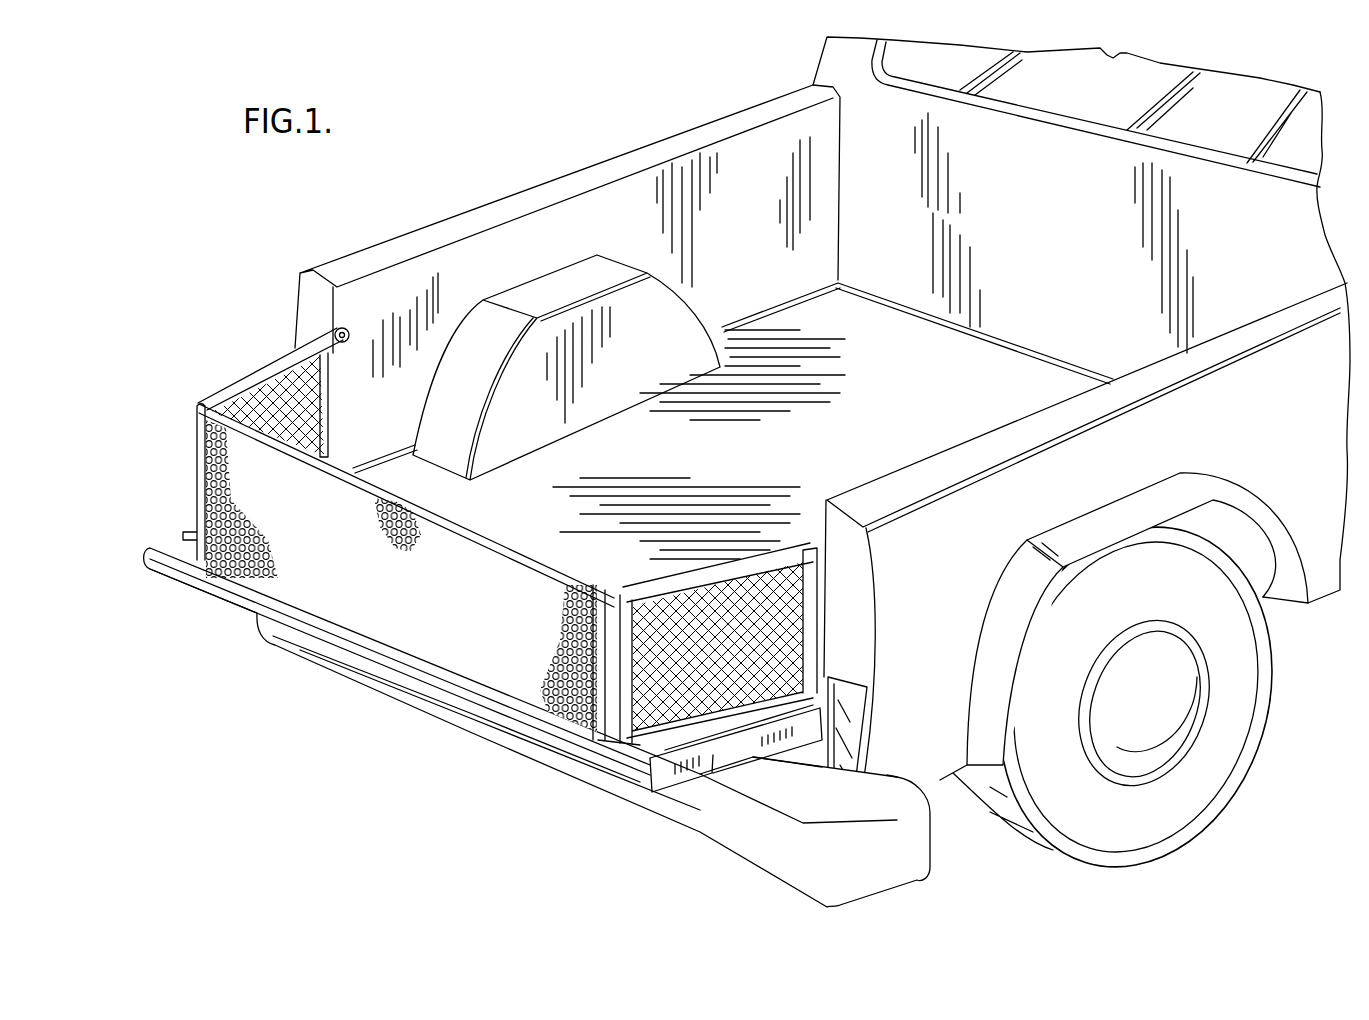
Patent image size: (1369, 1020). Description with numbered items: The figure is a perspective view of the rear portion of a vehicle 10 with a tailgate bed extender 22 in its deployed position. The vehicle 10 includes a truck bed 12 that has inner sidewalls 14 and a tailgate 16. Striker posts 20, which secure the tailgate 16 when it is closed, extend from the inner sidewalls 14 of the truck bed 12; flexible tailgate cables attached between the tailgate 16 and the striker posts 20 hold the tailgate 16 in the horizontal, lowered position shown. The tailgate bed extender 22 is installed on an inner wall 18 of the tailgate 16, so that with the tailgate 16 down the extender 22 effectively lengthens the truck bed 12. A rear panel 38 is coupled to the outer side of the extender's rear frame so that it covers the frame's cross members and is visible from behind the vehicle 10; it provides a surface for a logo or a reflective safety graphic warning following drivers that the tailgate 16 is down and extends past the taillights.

The vehicle 10 is at (557, 160).
The truck bed 12 is at (890, 391).
The inner sidewalls 14 is at (589, 241).
The tailgate 16 is at (213, 595).
The inner wall 18 is at (648, 768).
The striker posts 20 is at (346, 336).
The tailgate bed extender 22 is at (413, 600).
The rear panel 38 is at (537, 680).